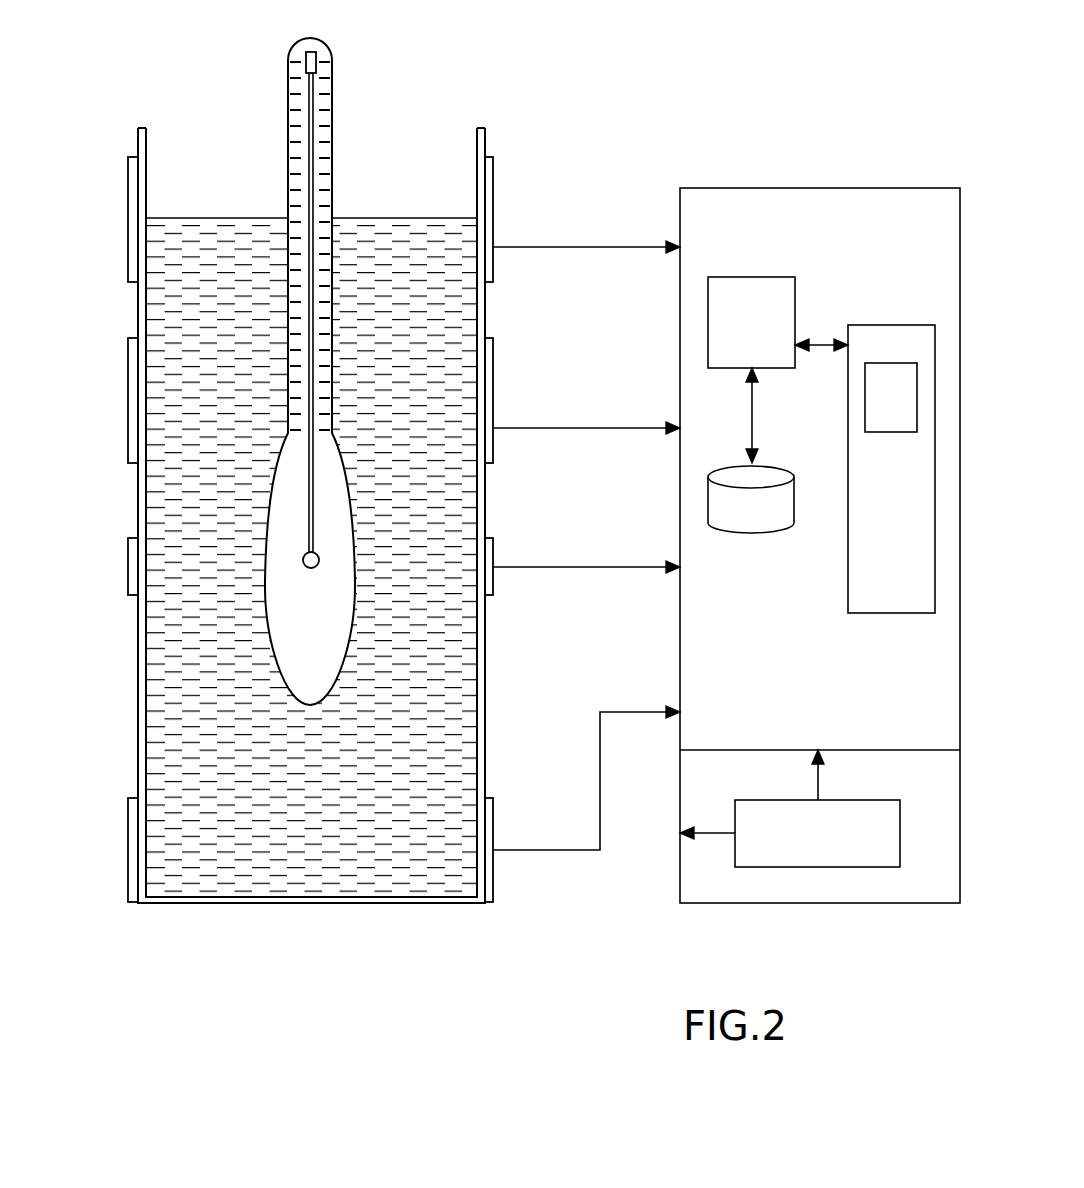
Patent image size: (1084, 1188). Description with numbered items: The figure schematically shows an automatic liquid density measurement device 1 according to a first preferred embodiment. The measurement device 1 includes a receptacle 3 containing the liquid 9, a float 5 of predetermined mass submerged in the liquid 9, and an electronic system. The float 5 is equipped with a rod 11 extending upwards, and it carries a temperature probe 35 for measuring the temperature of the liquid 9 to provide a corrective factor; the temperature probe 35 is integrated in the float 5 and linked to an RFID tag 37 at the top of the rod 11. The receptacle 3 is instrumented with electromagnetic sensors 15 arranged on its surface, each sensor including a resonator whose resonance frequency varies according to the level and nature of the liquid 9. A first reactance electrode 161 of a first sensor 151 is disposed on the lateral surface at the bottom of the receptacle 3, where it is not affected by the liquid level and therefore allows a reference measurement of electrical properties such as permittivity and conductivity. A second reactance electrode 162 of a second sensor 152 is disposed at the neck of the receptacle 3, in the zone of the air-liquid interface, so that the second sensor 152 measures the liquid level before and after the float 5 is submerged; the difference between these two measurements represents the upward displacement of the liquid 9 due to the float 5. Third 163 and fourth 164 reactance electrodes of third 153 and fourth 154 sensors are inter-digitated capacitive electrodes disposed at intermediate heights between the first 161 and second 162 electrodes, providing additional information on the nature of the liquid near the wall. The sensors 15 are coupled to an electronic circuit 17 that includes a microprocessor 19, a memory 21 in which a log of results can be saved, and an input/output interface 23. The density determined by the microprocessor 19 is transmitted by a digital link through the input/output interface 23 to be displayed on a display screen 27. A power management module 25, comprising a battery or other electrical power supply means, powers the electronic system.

The measurement device 1 is at (450, 966).
The receptacle 3 is at (137, 680).
The float 5 is at (349, 182).
The liquid 9 is at (162, 320).
The rod 11 is at (333, 120).
The electromagnetic sensors 15 is at (538, 163).
The electronic circuit 17 is at (817, 185).
The microprocessor 19 is at (752, 283).
The memory 21 is at (762, 532).
The input/output interface 23 is at (897, 612).
The power management module 25 is at (814, 868).
The display screen 27 is at (904, 430).
The temperature probe 35 is at (310, 521).
The RFID tag 37 is at (300, 55).
The first sensor 151 is at (510, 830).
The second sensor 152 is at (504, 209).
The third sensor 153 is at (512, 552).
The fourth sensor 154 is at (504, 381).
The first reactance electrode 161 is at (127, 882).
The second reactance electrode 162 is at (127, 268).
The third reactance electrode 163 is at (127, 580).
The fourth reactance electrode 164 is at (127, 445).